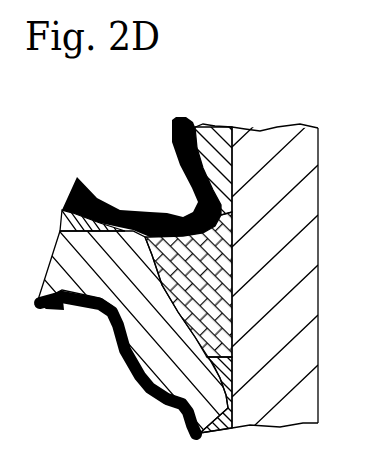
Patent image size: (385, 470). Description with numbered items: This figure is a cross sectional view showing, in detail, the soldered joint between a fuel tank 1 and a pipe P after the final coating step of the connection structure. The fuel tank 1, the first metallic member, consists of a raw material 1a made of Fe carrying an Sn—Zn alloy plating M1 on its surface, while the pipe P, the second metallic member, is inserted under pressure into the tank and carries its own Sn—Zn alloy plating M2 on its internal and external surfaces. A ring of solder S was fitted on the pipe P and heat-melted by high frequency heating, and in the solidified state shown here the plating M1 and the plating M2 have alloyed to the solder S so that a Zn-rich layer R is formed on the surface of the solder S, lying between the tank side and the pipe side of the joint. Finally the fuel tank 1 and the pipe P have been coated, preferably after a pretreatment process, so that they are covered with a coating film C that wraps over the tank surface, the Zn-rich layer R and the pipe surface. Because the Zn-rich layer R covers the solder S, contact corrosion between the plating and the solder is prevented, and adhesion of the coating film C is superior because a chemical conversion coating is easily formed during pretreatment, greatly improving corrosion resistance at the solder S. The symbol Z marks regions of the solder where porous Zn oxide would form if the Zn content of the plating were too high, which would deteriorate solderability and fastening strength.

The fuel tank 1 is at (70, 265).
The raw material 1a is at (135, 375).
The Sn—Zn alloy plating M1 is at (63, 218).
The Sn—Zn alloy plating M2 is at (213, 142).
The Zn-rich layer R is at (167, 212).
The pipe P is at (270, 147).
The coating film C is at (113, 210).
The solder S is at (203, 262).
The regions of porous Zn oxide Z is at (0, 372).